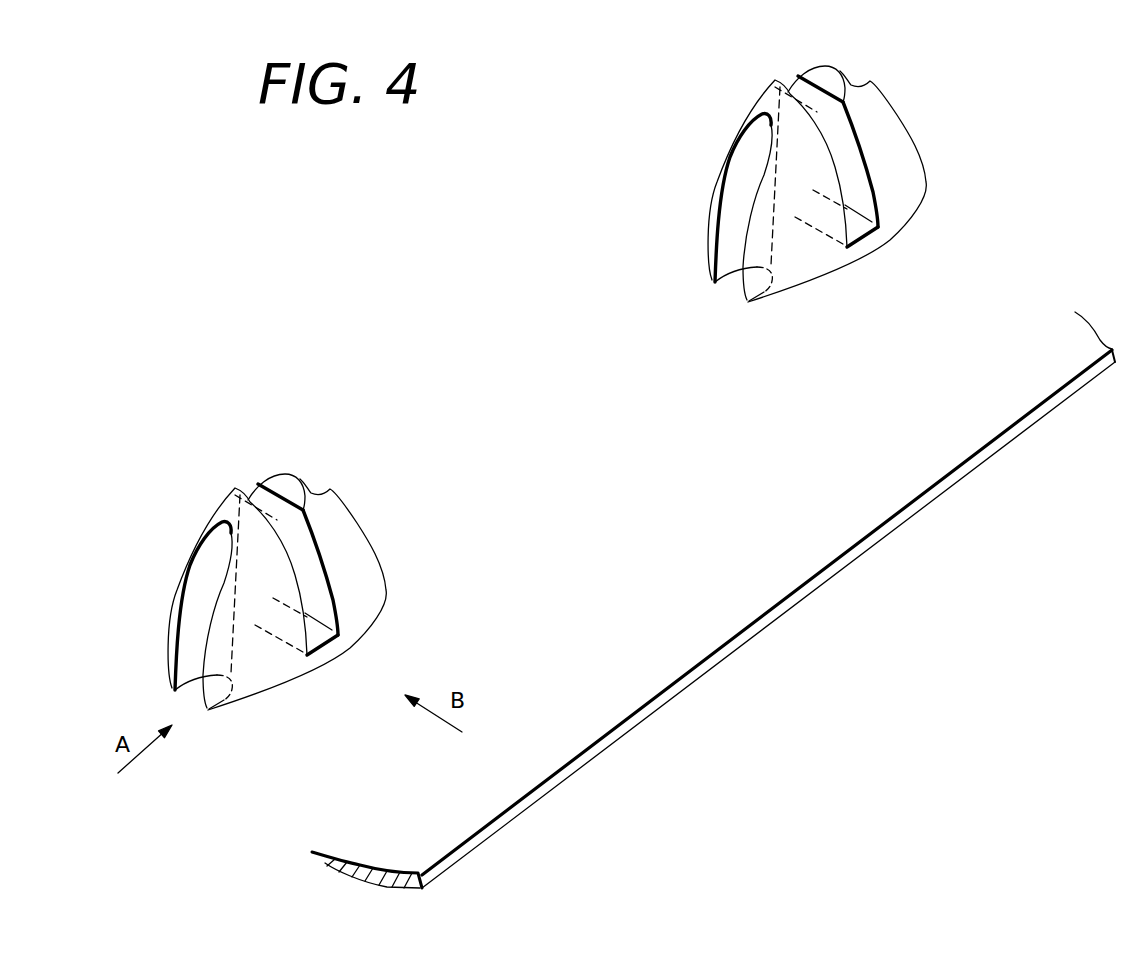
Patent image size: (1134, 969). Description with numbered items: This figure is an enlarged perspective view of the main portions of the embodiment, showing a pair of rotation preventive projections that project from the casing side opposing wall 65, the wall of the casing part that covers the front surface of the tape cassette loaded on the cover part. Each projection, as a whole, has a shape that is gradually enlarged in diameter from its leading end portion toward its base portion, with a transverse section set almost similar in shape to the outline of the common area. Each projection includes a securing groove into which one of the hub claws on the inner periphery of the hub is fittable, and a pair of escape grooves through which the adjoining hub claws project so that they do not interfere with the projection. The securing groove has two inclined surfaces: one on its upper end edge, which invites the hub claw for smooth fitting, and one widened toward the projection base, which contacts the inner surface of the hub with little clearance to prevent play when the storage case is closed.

The casing side opposing wall 65 is at (865, 523).